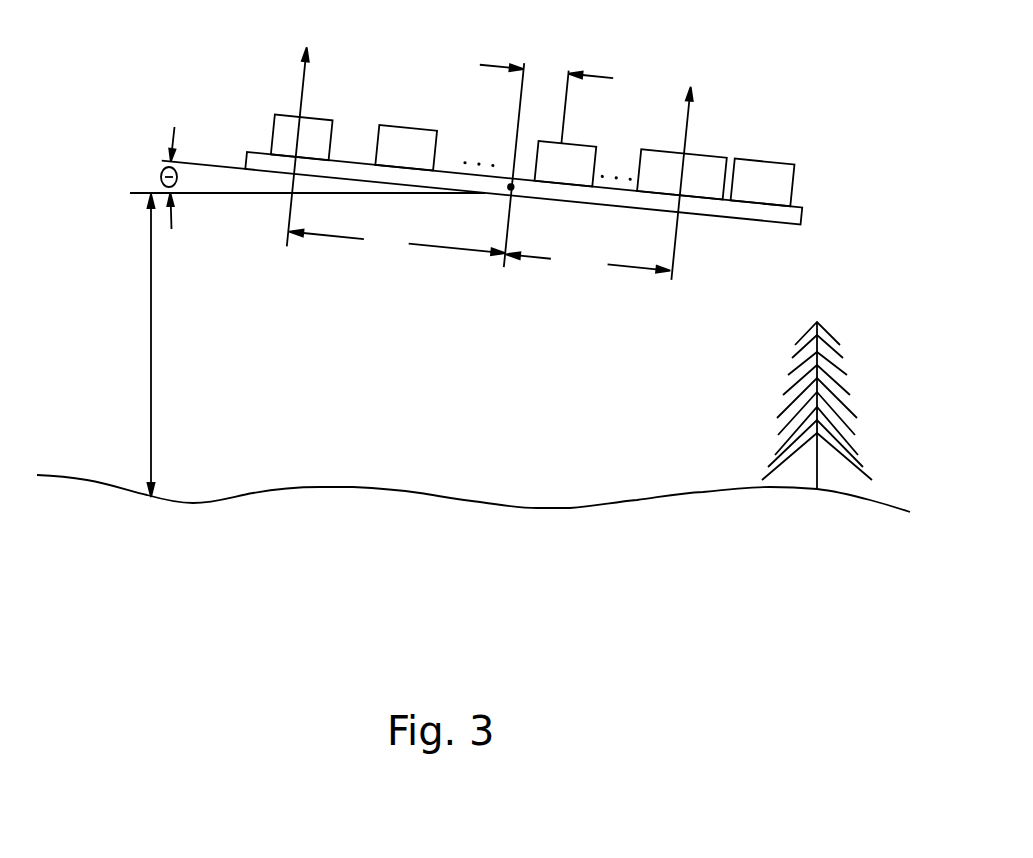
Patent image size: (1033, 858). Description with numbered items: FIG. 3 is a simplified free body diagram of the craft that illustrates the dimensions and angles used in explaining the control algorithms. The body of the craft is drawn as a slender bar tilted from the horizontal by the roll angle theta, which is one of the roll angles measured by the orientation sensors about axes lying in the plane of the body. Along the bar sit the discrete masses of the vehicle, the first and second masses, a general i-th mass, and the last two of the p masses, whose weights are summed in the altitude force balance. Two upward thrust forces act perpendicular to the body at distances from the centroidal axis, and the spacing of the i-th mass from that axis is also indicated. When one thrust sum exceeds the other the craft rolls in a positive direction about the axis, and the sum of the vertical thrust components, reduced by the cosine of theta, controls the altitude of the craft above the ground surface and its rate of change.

The roll angle theta is at (169, 178).